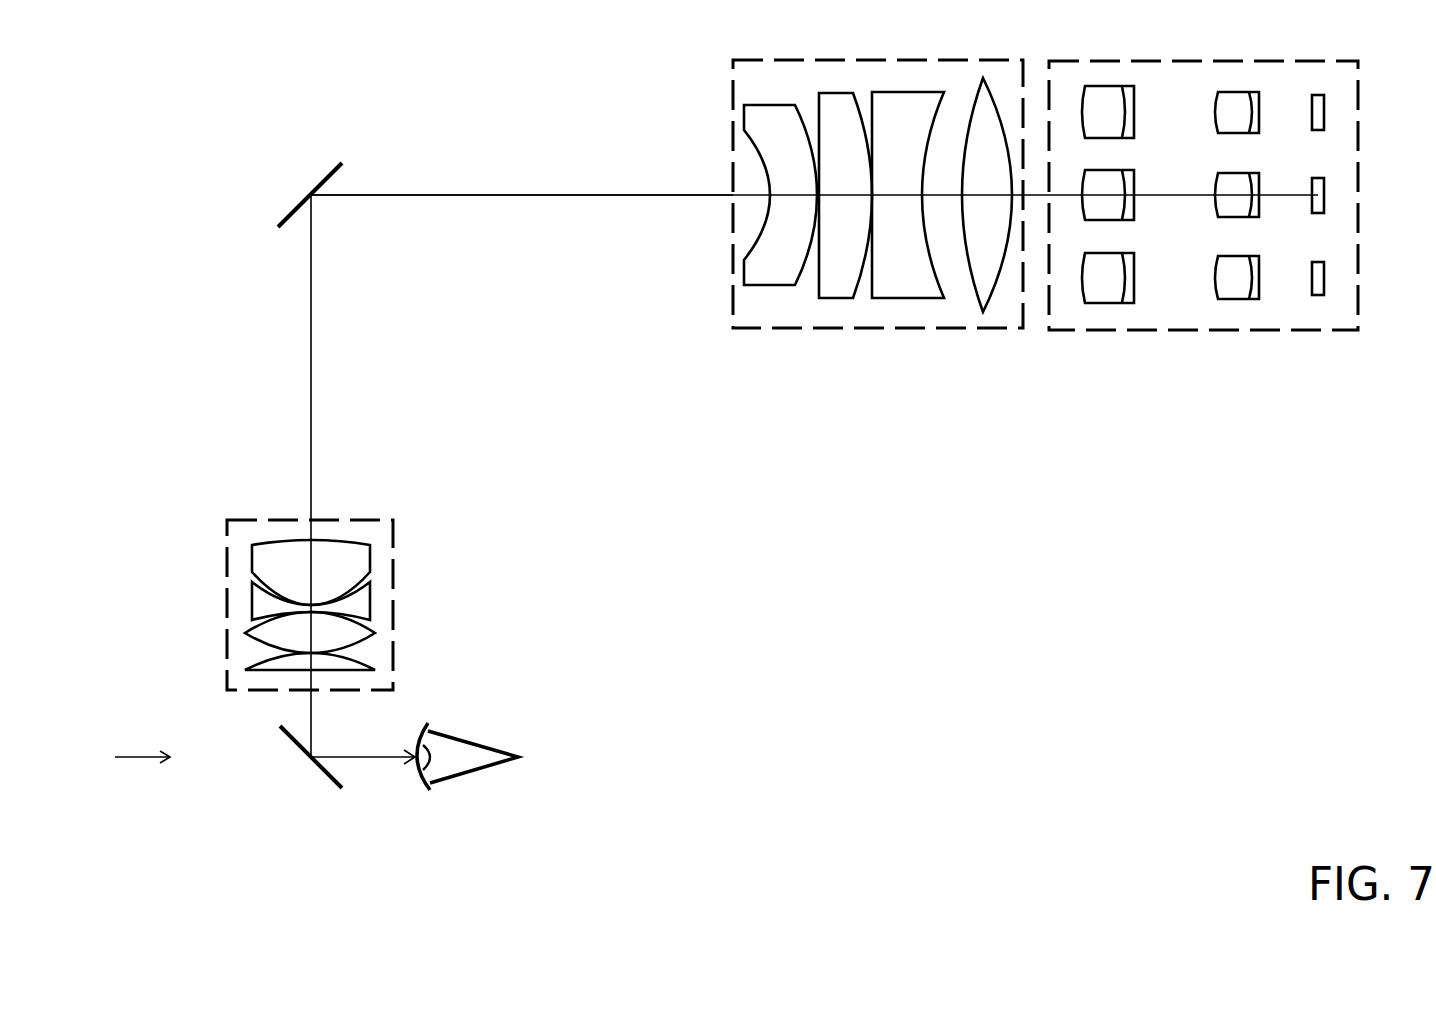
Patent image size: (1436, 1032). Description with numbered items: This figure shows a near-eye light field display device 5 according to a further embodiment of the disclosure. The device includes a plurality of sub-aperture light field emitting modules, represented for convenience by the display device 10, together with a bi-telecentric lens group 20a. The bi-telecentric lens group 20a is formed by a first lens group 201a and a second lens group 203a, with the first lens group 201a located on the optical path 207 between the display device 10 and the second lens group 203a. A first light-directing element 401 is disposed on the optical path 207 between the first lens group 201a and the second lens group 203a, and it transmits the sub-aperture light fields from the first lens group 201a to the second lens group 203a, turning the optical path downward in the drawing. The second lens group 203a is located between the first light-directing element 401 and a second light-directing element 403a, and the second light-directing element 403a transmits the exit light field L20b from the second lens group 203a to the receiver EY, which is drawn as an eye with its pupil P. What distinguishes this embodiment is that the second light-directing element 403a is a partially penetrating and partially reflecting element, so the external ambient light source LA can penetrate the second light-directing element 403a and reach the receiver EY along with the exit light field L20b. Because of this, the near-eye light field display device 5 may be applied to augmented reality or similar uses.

The near-eye light field display device 5 is at (133, 76).
The first light-directing element 401 is at (291, 211).
The optical path 207 is at (535, 193).
The bi-telecentric lens group 20a is at (653, 375).
The first lens group 201a is at (878, 330).
The second lens group 203a is at (378, 520).
The display device 10 is at (1222, 330).
The second light-directing element 403a is at (293, 743).
The external ambient light source LA is at (119, 757).
The exit light field L20b is at (372, 758).
The receiver EY is at (462, 753).
The pupil P is at (430, 758).